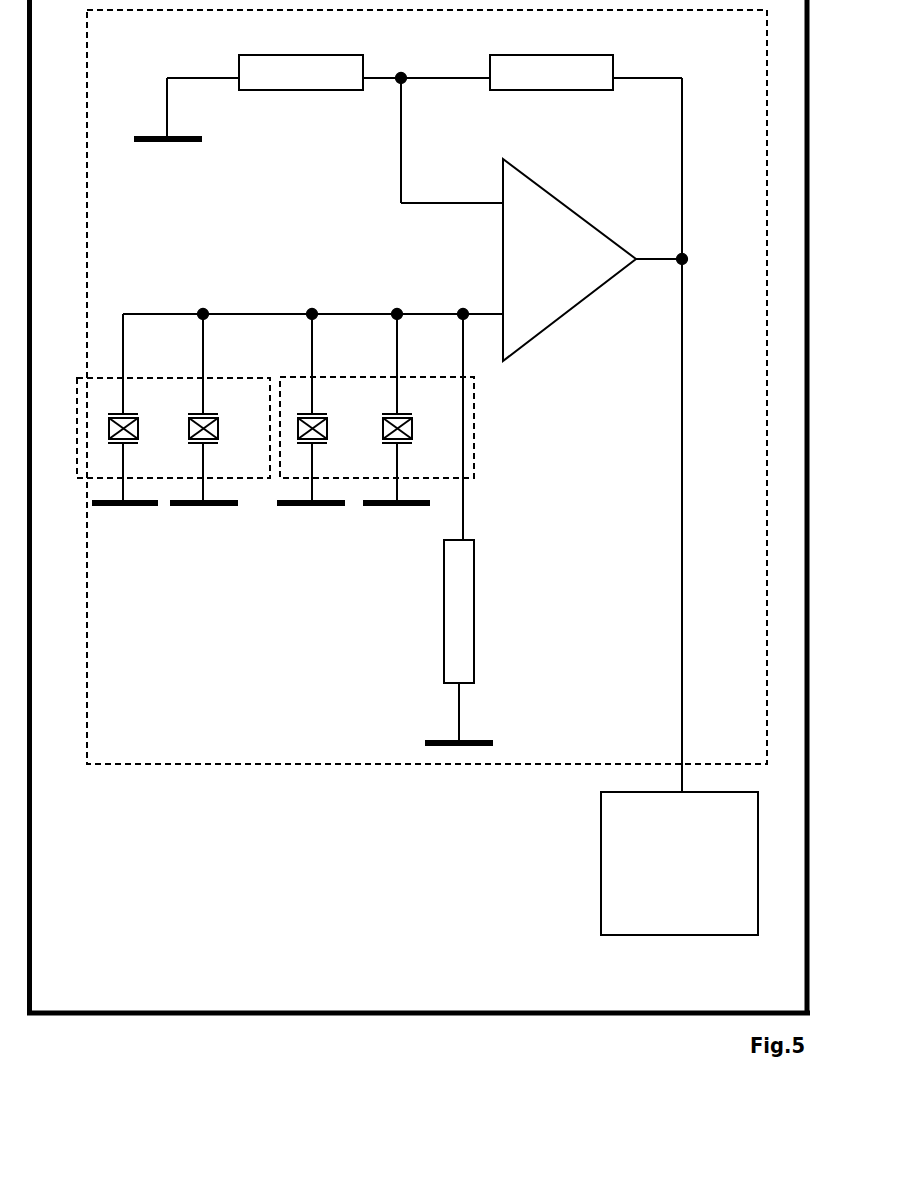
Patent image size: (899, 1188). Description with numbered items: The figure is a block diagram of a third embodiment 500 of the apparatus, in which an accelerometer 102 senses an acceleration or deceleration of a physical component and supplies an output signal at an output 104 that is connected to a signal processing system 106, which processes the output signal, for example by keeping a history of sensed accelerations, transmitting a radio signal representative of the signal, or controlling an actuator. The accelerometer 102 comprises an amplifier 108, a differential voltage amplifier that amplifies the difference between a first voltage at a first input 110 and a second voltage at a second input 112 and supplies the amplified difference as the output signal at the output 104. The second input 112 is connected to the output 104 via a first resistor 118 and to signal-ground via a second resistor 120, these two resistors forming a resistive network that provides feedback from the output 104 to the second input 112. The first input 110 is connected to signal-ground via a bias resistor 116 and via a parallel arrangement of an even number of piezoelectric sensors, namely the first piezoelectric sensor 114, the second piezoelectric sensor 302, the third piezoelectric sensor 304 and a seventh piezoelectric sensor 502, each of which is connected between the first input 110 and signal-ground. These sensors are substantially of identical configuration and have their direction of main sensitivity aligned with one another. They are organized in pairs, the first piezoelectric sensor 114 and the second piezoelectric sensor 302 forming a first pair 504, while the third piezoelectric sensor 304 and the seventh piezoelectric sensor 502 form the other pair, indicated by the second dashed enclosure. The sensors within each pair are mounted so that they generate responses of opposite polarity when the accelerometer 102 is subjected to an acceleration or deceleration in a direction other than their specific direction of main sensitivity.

The third embodiment 500 is at (422, 534).
The accelerometer 102 is at (212, 757).
The output 104 is at (688, 262).
The signal processing system 106 is at (683, 930).
The amplifier 108 is at (582, 293).
The first input 110 is at (487, 312).
The second input 112 is at (483, 203).
The first piezoelectric sensor 114 is at (135, 428).
The bias resistor 116 is at (463, 597).
The first resistor 118 is at (547, 81).
The second resistor 120 is at (265, 83).
The second piezoelectric sensor 302 is at (215, 428).
The third piezoelectric sensor 304 is at (325, 426).
The seventh piezoelectric sensor 502 is at (222, 376).
The first pair 504 is at (477, 461).